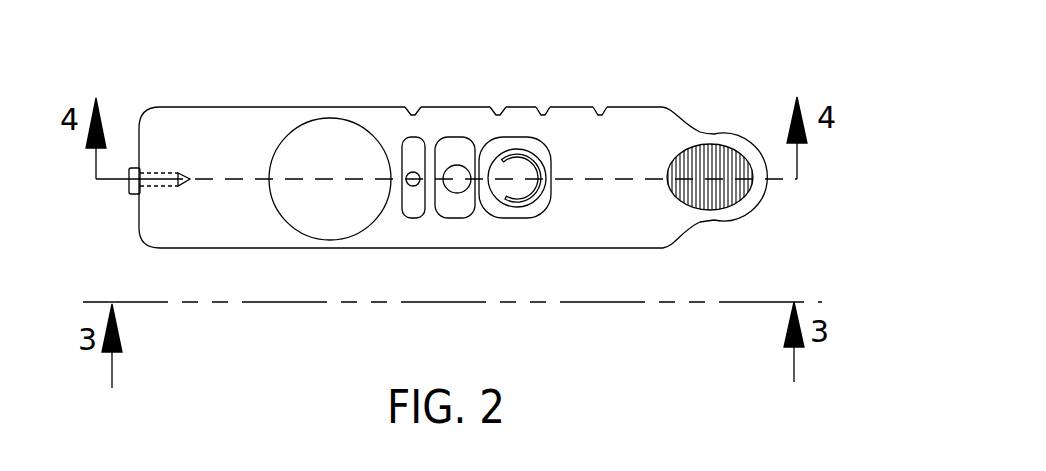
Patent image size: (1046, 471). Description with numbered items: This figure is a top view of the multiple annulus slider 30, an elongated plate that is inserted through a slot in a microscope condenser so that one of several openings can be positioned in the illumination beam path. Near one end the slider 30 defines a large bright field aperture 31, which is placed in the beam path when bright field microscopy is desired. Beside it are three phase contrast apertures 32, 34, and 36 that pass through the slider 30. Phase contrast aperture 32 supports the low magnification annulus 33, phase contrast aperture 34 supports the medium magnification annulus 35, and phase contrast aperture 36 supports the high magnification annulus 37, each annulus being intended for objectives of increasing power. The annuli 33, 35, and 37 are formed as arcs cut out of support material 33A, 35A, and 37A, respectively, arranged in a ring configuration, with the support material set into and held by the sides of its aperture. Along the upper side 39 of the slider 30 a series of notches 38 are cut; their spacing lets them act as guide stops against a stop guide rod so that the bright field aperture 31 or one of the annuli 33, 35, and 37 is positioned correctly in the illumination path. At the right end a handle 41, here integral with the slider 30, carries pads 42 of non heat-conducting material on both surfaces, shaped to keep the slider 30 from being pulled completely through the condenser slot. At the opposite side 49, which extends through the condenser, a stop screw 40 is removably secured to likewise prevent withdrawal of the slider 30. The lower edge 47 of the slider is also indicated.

The multiple annulus slider 30 is at (684, 66).
The bright field aperture 31 is at (322, 216).
The phase contrast aperture 32 is at (400, 136).
The low magnification annulus 33 is at (408, 216).
The support material 33A is at (413, 187).
The phase contrast aperture 34 is at (467, 137).
The medium magnification annulus 35 is at (460, 217).
The support material 35A is at (466, 195).
The phase contrast aperture 36 is at (510, 137).
The high magnification annulus 37 is at (525, 210).
The support material 37A is at (548, 200).
The notches 38 is at (413, 113).
The side 39 is at (204, 101).
The stop screw 40 is at (128, 190).
The handle 41 is at (734, 111).
The pads 42 is at (733, 190).
The bottom edge of arm 47 is at (232, 251).
The side 49 is at (130, 235).